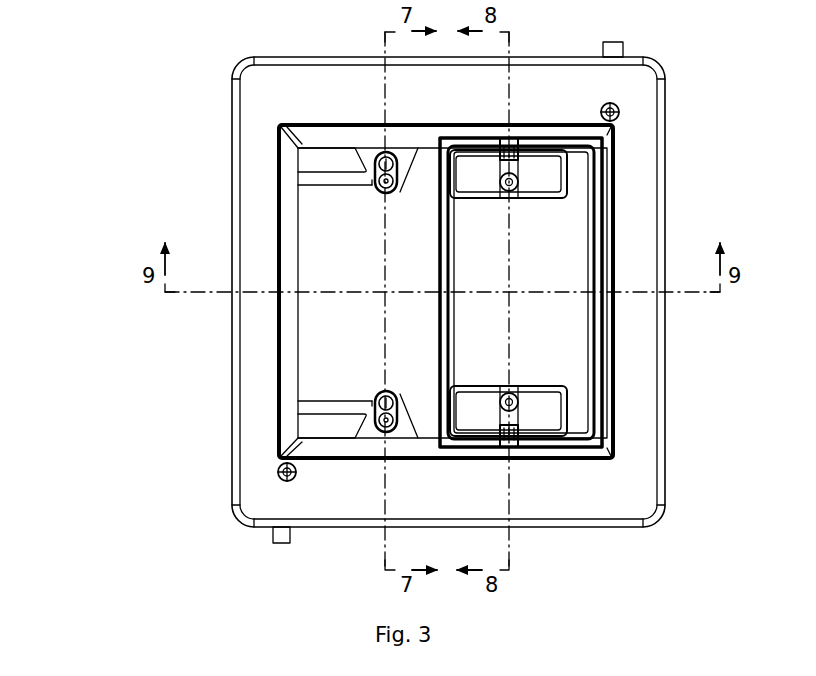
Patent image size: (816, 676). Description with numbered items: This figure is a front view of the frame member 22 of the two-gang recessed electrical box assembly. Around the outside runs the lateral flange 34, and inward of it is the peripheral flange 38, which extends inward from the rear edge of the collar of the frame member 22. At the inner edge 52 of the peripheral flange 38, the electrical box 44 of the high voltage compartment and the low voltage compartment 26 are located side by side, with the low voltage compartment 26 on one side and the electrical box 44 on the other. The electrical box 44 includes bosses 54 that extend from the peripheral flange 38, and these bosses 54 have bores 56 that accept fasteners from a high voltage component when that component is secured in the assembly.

The frame member 22 is at (168, 124).
The lateral flange 34 is at (346, 107).
The low voltage compartment 26 is at (355, 254).
The electrical box 44 is at (561, 257).
The peripheral flange 38 is at (287, 334).
The inner edge 52 is at (295, 375).
The bores 56 is at (511, 389).
The bosses 54 is at (568, 408).